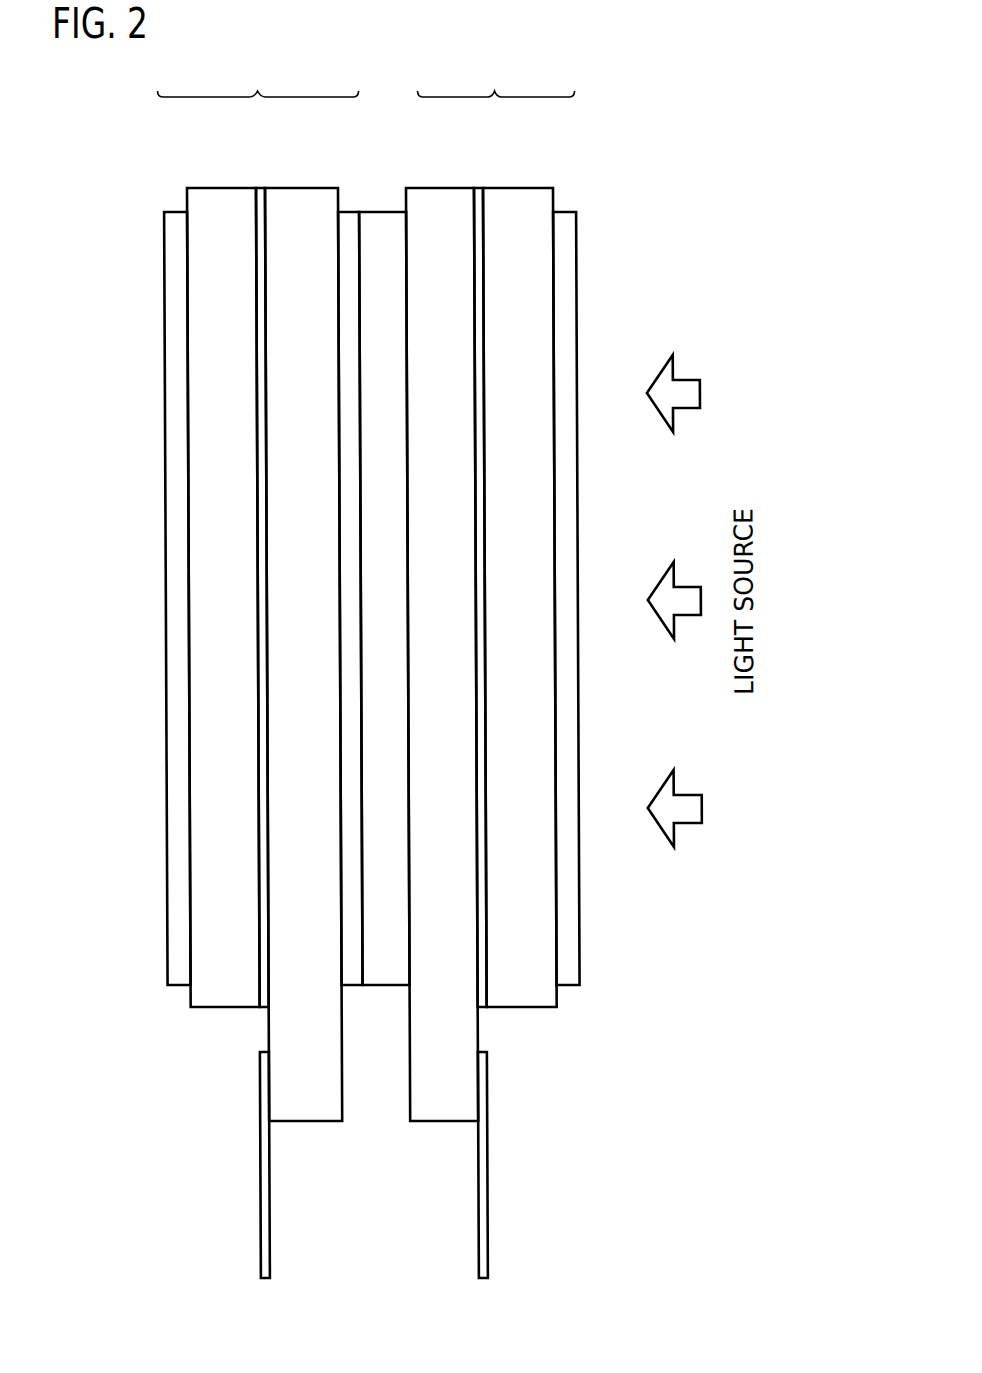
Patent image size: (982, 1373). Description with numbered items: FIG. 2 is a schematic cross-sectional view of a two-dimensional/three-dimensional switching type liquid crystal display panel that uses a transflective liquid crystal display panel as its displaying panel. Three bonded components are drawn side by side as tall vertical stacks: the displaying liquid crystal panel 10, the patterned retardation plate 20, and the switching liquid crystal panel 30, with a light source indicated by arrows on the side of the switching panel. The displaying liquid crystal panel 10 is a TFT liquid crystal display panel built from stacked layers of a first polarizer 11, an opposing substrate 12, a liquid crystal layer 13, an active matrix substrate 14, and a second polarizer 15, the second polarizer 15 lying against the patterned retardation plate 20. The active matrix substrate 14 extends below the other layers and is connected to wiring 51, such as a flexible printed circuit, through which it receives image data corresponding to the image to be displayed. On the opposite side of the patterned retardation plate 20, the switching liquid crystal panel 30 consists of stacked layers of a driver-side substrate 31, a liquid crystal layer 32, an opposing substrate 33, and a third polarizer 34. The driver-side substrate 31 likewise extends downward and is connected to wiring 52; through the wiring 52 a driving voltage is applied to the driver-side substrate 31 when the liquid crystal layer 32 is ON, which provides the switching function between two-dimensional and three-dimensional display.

The displaying liquid crystal panel 10 is at (257, 79).
The first polarizer 11 is at (178, 212).
The opposing substrate 12 is at (230, 188).
The liquid crystal layer 13 is at (262, 188).
The active matrix substrate 14 is at (302, 188).
The second polarizer 15 is at (349, 212).
The patterned retardation plate 20 is at (391, 212).
The switching liquid crystal panel 30 is at (495, 79).
The driver-side substrate 31 is at (442, 188).
The liquid crystal layer 32 is at (479, 188).
The opposing substrate 33 is at (515, 188).
The third polarizer 34 is at (565, 212).
The wiring 51 is at (257, 1278).
The wiring 52 is at (475, 1278).